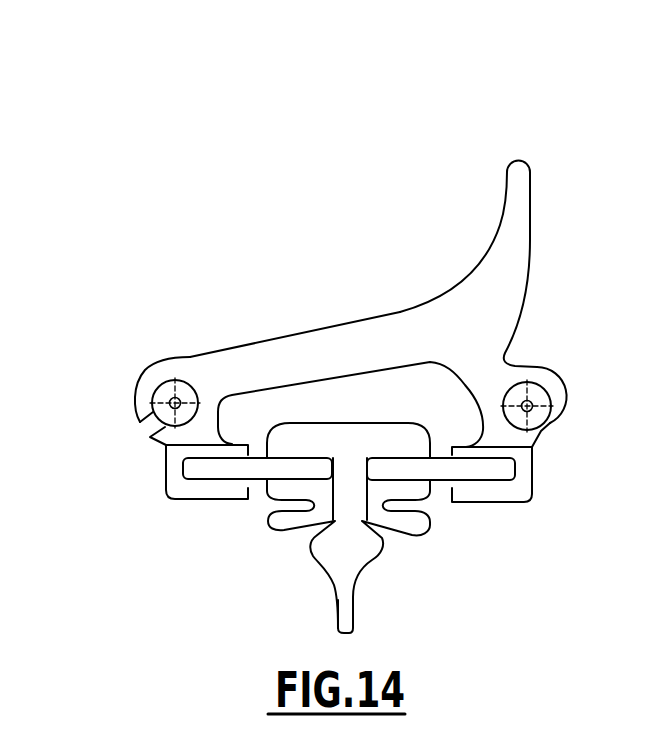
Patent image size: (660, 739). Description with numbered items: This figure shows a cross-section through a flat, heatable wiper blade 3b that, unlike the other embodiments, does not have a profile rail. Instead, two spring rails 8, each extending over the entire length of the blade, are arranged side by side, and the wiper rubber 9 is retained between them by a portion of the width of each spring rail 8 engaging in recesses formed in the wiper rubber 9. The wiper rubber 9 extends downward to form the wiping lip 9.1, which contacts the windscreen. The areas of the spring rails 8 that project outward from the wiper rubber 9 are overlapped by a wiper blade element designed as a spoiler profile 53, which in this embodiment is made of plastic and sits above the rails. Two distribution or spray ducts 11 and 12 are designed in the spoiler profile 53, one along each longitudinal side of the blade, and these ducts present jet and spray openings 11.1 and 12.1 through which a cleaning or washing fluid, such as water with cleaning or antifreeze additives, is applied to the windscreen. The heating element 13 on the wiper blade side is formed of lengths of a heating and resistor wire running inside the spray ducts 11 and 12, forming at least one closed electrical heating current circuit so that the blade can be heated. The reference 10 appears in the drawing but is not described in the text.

The flat wiper blade 3b is at (472, 164).
The lever 10 is at (537, 220).
The spoiler profile 53 is at (423, 328).
The spray duct 11 is at (165, 392).
The jet openings 11.1 is at (148, 433).
The spray duct 12 is at (540, 392).
The jet openings 12.1 is at (552, 433).
The heating element 13 is at (171, 401).
The spring rail 8 is at (258, 469).
The wiper rubber 9 is at (302, 518).
The wiping lip 9.1 is at (353, 613).